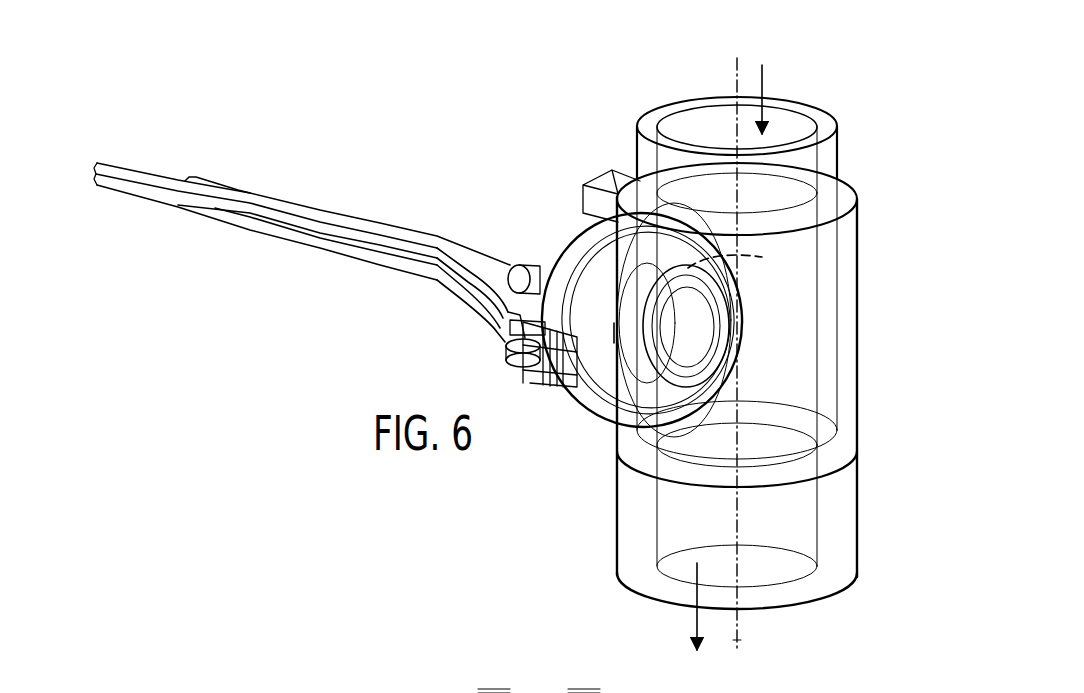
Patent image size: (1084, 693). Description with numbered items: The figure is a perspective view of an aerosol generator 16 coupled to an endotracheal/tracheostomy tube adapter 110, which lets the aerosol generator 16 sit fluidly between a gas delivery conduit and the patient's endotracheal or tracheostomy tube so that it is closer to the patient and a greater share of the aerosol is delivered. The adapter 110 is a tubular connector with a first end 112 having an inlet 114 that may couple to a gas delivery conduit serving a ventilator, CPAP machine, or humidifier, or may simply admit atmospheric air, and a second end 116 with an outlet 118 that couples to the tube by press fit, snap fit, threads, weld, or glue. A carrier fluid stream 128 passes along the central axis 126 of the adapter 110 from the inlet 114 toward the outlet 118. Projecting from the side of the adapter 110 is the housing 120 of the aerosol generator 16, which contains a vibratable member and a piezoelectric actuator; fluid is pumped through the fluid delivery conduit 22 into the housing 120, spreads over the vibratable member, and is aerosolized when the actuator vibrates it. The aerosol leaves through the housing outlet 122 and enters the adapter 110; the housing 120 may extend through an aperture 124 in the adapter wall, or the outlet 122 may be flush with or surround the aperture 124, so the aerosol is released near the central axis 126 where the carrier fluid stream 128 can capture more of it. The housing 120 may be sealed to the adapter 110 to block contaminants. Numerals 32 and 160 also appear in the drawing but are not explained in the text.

The aerosol generator 16 is at (311, 137).
The fluid delivery conduit 22 is at (483, 268).
The handle lever 32 is at (206, 240).
The endotracheal/tracheostomy tube adapter 110 is at (872, 493).
The first end 112 is at (831, 153).
The inlet 114 is at (733, 75).
The second end 116 is at (830, 576).
The outlet 118 is at (682, 568).
The housing 120 is at (548, 177).
The outlet 122 is at (693, 330).
The aperture 124 is at (762, 257).
The central axis 126 is at (742, 650).
The carrier fluid stream 128 is at (763, 76).
The connection indicators 160 is at (480, 692).